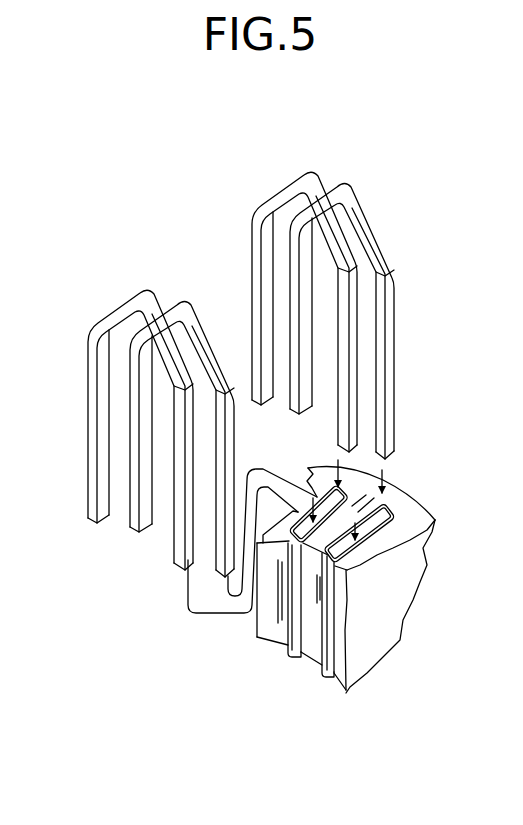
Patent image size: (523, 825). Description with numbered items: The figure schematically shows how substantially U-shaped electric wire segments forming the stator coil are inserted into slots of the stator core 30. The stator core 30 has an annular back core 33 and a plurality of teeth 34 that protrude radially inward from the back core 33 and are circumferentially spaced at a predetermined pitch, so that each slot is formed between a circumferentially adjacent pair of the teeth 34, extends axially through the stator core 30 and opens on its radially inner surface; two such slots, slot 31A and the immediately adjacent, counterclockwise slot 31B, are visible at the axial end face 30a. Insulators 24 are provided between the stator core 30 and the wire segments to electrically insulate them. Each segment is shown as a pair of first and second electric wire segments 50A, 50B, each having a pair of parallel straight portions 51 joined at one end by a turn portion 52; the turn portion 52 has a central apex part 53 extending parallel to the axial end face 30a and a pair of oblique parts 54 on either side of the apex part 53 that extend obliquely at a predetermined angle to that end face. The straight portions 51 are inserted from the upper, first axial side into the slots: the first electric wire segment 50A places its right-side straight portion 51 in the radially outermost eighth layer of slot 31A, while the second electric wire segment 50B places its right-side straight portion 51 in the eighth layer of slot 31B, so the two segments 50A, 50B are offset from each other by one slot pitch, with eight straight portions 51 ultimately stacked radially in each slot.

The stator core 30 is at (335, 587).
The axial end face 30a is at (407, 515).
The slot 31A is at (332, 660).
The slot 31B is at (293, 648).
The back core 33 is at (405, 527).
The insulator 24 is at (378, 545).
The tooth 34 is at (268, 620).
The first electric wire segment 50A is at (207, 322).
The second electric wire segment 50B is at (103, 326).
The straight portion 51 is at (347, 377).
The turn portion 52 is at (112, 313).
The apex part 53 is at (130, 297).
The oblique part 54 is at (107, 308).